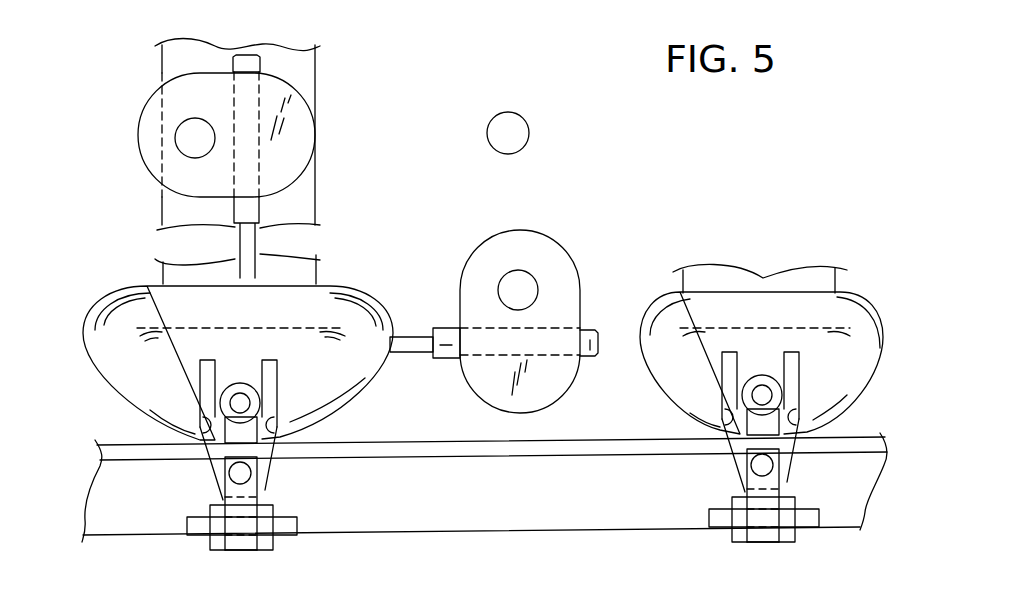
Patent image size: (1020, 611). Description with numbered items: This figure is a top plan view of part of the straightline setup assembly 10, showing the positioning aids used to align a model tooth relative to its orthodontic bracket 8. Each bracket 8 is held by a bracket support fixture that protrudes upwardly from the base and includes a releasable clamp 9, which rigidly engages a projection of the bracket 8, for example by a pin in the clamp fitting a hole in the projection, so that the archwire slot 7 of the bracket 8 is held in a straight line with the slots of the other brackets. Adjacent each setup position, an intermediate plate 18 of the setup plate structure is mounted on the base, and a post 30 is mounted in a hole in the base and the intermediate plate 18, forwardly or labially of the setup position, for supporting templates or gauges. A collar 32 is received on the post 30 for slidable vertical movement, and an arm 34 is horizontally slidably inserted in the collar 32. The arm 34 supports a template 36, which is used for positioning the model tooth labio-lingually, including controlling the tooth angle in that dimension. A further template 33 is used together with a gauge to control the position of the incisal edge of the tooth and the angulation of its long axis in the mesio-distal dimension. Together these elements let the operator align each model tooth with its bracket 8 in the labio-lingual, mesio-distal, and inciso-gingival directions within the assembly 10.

The archwire slot 7 is at (843, 432).
The orthodontic bracket 8 is at (260, 467).
The releasable clamp 9 is at (267, 513).
The straightline setup assembly 10 is at (410, 470).
The intermediate plate 18 is at (307, 68).
The post 30 is at (188, 128).
The collar 32 is at (150, 153).
The template 33 is at (418, 343).
The arm 34 is at (598, 332).
The template 36 is at (254, 258).